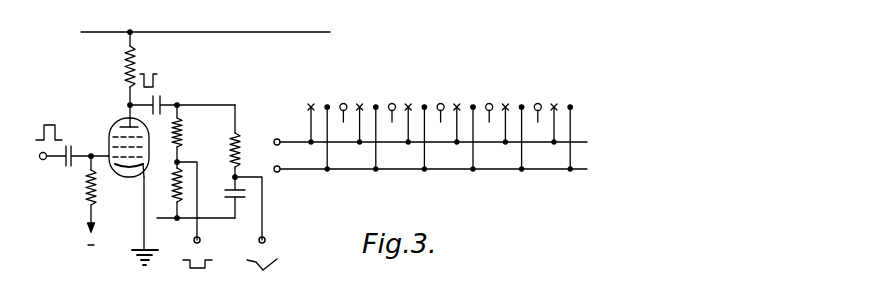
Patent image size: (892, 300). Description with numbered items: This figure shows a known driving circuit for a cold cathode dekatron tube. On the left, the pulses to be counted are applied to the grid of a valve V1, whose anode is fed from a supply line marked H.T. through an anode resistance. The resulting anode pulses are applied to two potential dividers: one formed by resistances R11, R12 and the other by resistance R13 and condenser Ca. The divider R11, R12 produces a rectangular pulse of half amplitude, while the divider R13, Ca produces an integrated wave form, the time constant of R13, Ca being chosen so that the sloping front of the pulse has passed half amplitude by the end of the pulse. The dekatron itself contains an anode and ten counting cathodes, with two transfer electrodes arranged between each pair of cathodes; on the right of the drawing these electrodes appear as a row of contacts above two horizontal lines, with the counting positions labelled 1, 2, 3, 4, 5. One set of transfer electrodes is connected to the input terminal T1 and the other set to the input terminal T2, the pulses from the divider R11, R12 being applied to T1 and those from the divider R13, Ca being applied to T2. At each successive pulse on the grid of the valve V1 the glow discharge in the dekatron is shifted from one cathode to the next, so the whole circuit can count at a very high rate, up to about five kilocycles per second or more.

The high tension supply line H.T. is at (223, 33).
The valve V1 is at (118, 120).
The resistance R11 is at (192, 133).
The resistance R12 is at (166, 190).
The resistance R13 is at (250, 141).
The condenser Ca is at (225, 197).
The input terminal T1 is at (430, 133).
The input terminal T2 is at (430, 178).
The contact position 1 is at (343, 122).
The contact position 2 is at (392, 122).
The contact position 3 is at (440, 122).
The contact position 4 is at (489, 122).
The contact position 5 is at (537, 122).